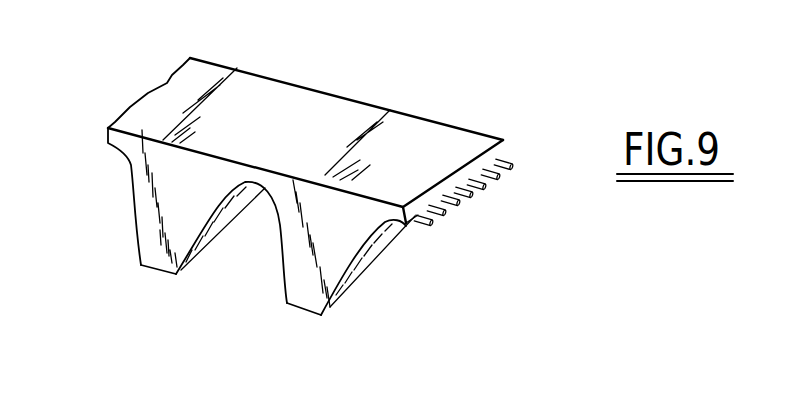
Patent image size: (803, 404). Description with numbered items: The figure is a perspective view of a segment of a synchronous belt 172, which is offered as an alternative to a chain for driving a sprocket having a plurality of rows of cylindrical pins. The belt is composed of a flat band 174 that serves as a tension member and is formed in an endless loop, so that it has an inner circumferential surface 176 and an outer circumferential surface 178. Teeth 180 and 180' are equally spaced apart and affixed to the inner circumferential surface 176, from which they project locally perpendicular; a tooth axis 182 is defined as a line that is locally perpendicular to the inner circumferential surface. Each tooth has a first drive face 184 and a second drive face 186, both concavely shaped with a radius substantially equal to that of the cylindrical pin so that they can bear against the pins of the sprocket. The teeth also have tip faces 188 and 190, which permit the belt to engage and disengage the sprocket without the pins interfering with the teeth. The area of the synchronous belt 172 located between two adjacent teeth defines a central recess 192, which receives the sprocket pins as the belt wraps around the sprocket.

The synchronous belt 172 is at (352, 100).
The flat band 174 is at (514, 168).
The inner circumferential surface 176 is at (408, 225).
The outer circumferential surface 178 is at (503, 140).
The tooth 180 is at (326, 272).
The tooth 180' is at (133, 286).
The tooth axis 182 is at (162, 200).
The first drive face 184 is at (385, 240).
The second drive face 186 is at (278, 257).
The tip face 188 is at (338, 296).
The tip face 190 is at (285, 300).
The central recess 192 is at (265, 195).